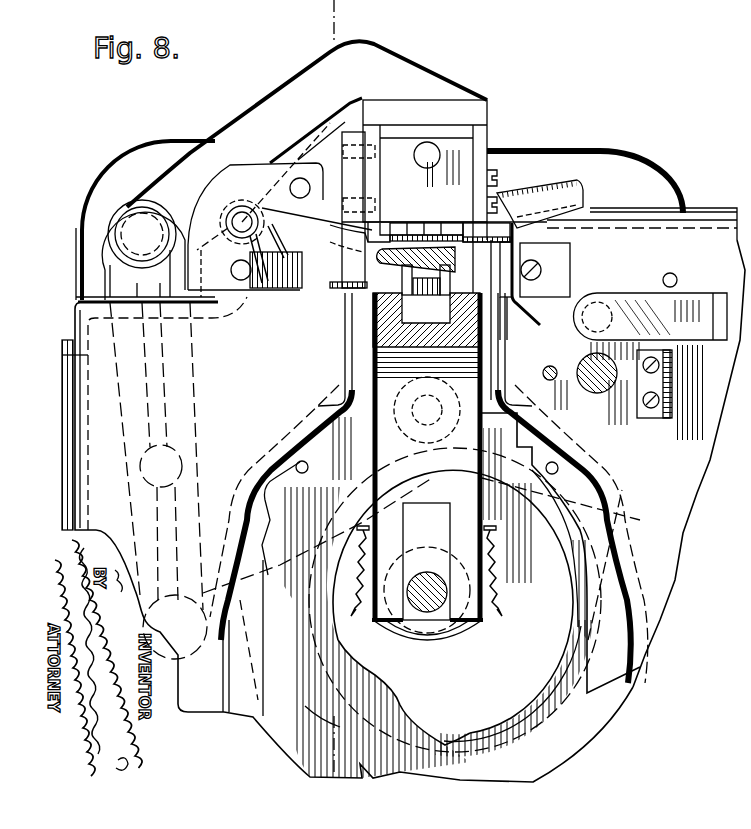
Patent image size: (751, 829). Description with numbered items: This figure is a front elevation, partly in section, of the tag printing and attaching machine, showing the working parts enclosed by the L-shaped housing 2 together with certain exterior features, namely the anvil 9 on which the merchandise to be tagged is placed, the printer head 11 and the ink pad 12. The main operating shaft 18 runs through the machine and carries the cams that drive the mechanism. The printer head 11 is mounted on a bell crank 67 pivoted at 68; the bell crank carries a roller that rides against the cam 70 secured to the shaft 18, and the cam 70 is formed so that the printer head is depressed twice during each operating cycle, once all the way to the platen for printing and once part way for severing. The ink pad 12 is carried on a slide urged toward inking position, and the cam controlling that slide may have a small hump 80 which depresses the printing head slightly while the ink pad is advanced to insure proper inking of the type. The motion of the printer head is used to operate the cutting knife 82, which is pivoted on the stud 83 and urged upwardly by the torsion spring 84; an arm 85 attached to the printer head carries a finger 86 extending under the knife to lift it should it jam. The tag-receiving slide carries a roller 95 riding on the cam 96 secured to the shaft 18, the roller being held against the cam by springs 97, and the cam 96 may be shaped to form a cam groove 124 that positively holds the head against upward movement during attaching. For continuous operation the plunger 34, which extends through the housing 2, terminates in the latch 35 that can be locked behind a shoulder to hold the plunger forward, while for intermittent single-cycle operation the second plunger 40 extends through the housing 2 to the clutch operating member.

The anvil 9 is at (358, 15).
The L-shaped housing 2 is at (625, 160).
The printer head 11 is at (462, 155).
The ink pad 12 is at (524, 193).
The main operating shaft 18 is at (425, 573).
The plunger 34 is at (601, 302).
The latch 35 is at (722, 340).
The second plunger 40 is at (590, 393).
The bell crank 67 is at (277, 94).
The pivot 68 is at (145, 250).
The cam 70 is at (232, 672).
The hump 80 is at (303, 706).
The cutting knife 82 is at (311, 248).
The stud 83 is at (236, 202).
The torsion spring 84 is at (267, 292).
The arm 85 is at (367, 193).
The finger 86 is at (343, 294).
The roller 95 is at (455, 522).
The cam 96 is at (457, 607).
The springs 97 is at (360, 573).
The cam groove 124 is at (277, 457).